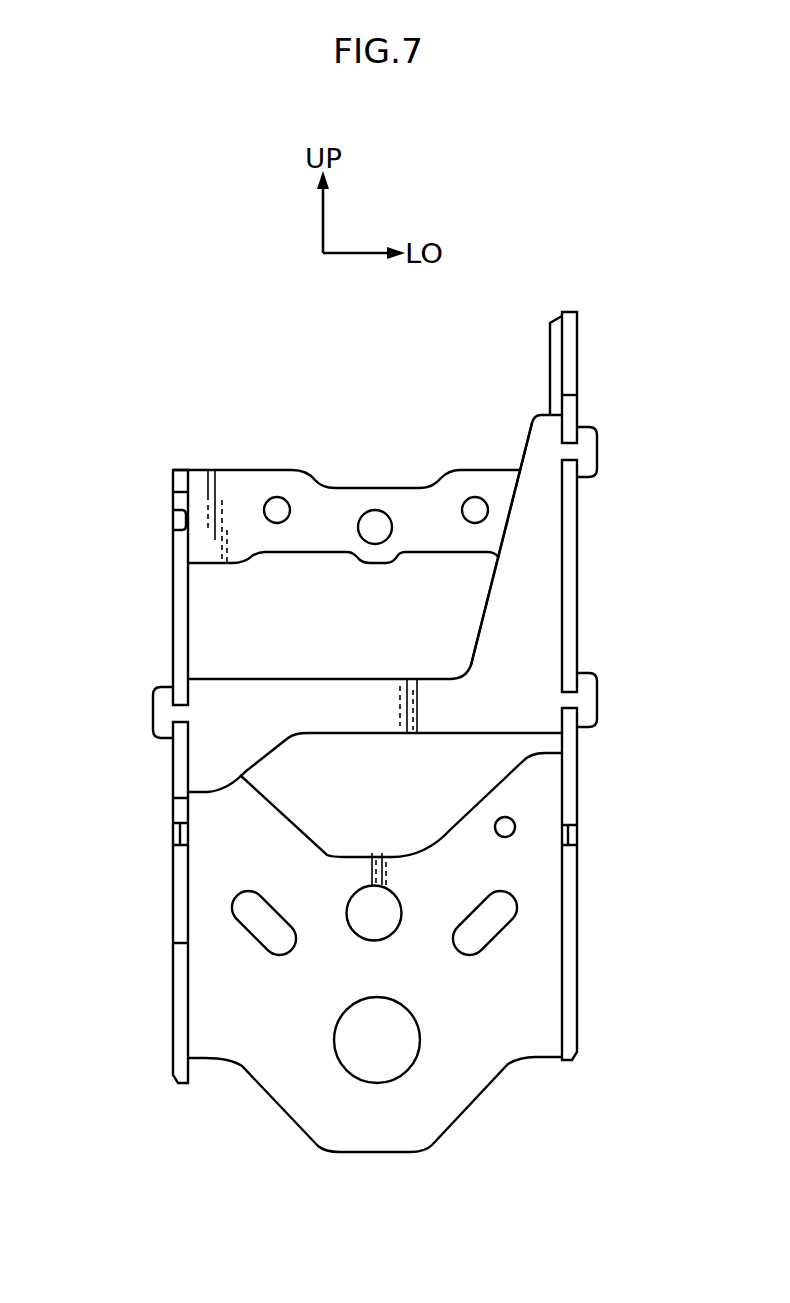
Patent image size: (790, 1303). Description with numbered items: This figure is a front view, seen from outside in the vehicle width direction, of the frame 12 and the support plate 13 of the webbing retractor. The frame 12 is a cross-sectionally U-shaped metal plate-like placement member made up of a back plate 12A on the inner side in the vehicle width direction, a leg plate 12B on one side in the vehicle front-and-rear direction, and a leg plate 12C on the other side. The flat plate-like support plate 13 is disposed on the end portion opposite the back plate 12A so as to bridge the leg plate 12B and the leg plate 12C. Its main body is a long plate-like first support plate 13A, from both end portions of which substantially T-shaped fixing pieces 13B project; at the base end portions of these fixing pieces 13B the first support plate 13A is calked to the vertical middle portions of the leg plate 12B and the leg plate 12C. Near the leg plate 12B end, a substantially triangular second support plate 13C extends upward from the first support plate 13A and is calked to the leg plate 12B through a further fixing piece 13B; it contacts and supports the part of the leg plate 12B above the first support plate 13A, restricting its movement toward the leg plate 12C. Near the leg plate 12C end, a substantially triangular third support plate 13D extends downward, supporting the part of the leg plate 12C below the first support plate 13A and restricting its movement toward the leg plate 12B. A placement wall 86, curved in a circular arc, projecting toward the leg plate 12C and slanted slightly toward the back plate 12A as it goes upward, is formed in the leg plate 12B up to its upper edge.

The frame 12 is at (376, 732).
The back plate 12A is at (262, 1088).
The leg plate 12B is at (570, 912).
The leg plate 12C is at (178, 902).
The support plate 13 is at (373, 610).
The first support plate 13A is at (398, 737).
The fixing pieces 13B is at (598, 450).
The second support plate 13C is at (483, 613).
The third support plate 13D is at (248, 770).
The placement wall 86 is at (548, 374).